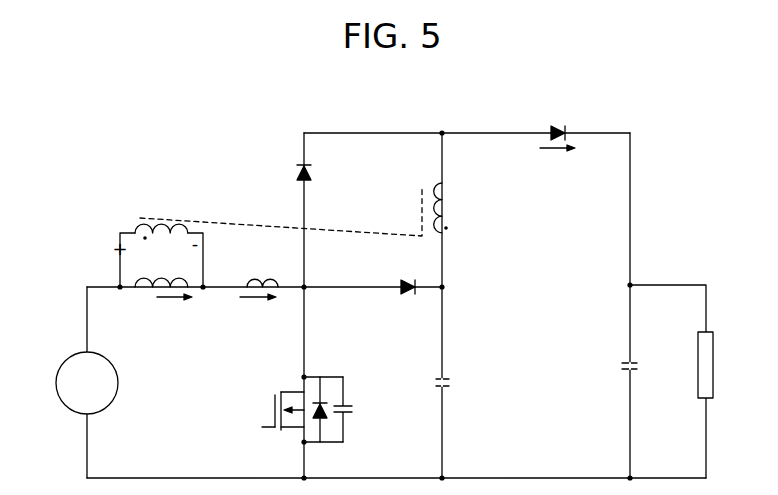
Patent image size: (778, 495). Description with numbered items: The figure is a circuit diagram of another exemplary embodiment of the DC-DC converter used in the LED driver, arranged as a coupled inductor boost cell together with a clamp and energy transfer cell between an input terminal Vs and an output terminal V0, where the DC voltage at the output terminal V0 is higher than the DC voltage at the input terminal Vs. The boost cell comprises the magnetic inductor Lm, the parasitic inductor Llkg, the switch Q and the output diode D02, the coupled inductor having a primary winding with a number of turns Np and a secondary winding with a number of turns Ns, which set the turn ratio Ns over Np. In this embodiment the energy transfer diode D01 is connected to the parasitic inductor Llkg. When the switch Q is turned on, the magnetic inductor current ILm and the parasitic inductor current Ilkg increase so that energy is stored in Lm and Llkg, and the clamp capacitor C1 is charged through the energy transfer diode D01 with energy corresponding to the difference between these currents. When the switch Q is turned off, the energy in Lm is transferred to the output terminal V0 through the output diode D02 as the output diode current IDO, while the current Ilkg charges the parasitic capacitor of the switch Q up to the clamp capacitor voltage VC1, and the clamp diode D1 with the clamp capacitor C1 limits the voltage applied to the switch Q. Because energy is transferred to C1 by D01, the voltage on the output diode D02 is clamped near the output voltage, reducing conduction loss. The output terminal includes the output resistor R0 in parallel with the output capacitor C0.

The number of turns of primary winding Np is at (278, 213).
The number of turns of secondary winding Ns is at (423, 208).
The magnetic inductor Lm is at (146, 289).
The parasitic inductor Llkg is at (257, 268).
The magnetic inductor current ILm is at (174, 311).
The parasitic inductor current Ilkg is at (258, 311).
The energy transfer diode D01 is at (286, 175).
The output diode D02 is at (556, 120).
The output diode current IDO is at (557, 162).
The clamp diode D1 is at (403, 273).
The switch Q is at (297, 409).
The clamp capacitor C1 is at (427, 378).
The clamp capacitor voltage VC1 is at (461, 382).
The output capacitor C0 is at (613, 368).
The output resistor R0 is at (688, 365).
The output terminal V0 is at (728, 364).
The input terminal Vs is at (69, 383).